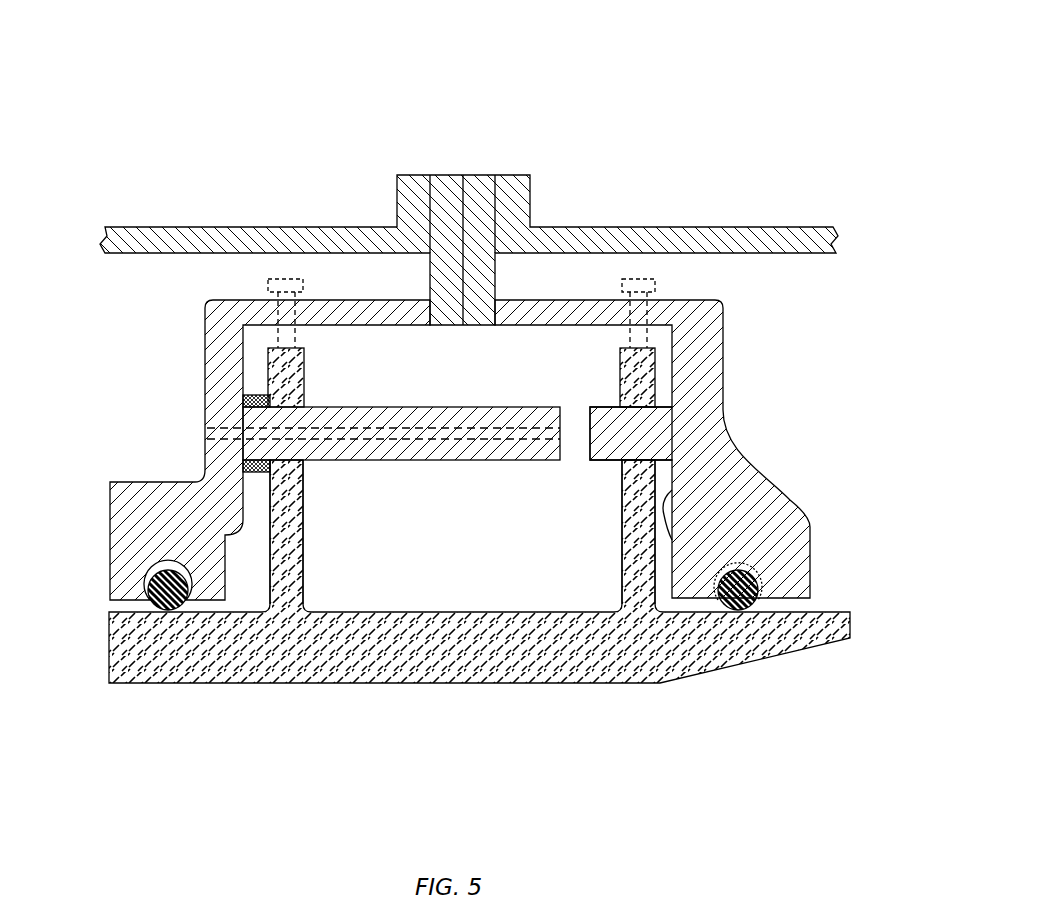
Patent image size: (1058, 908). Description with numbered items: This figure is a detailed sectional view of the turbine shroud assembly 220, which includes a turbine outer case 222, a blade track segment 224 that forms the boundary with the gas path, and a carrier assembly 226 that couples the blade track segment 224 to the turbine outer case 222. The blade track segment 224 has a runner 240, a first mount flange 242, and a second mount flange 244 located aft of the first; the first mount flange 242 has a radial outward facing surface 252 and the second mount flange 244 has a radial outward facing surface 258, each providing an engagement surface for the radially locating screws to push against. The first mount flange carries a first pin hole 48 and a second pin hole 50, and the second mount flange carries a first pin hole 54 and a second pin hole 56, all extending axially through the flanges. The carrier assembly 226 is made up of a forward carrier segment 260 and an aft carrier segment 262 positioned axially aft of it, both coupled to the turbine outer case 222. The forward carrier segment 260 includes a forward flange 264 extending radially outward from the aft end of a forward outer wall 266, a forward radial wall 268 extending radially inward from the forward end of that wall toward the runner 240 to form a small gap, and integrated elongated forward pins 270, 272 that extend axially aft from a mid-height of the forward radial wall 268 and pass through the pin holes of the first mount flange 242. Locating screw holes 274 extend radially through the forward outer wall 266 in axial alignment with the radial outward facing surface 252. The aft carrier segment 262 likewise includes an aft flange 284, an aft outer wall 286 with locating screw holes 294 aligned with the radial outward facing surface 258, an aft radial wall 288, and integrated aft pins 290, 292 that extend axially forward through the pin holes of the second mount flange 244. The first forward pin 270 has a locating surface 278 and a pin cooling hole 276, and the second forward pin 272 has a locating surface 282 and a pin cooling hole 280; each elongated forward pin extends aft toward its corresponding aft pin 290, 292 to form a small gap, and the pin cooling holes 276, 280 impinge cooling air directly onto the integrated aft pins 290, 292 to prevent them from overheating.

The turbine shroud assembly 220 is at (750, 88).
The turbine outer case 222 is at (567, 176).
The blade track segment 224 is at (479, 602).
The carrier assembly 226 is at (717, 393).
The runner 240 is at (715, 647).
The first mount flange 242 is at (282, 575).
The second mount flange 244 is at (642, 588).
The radial outward facing surface 252 is at (275, 343).
The radial outward facing surface 258 is at (648, 348).
The forward carrier segment 260 is at (184, 297).
The aft carrier segment 262 is at (717, 393).
The forward flange 264 is at (443, 190).
The forward outer wall 266 is at (342, 310).
The forward radial wall 268 is at (264, 394).
The first integrated elongated forward pin 270 is at (401, 591).
The second integrated elongated forward pin 272 is at (401, 591).
The locating screw holes 274 is at (201, 343).
The pin cooling hole 276 is at (401, 591).
The locating surface 278 is at (214, 428).
The pin cooling hole 280 is at (512, 435).
The locating surface 282 is at (606, 408).
The aft flange 284 is at (481, 190).
The aft outer wall 286 is at (565, 307).
The aft radial wall 288 is at (667, 393).
The first integrated aft pin 290 is at (704, 596).
The second integrated aft pin 292 is at (704, 596).
The locating screw holes 294 is at (729, 296).
The first pin hole 48 is at (151, 456).
The second pin hole 50 is at (285, 468).
The first pin hole 54 is at (704, 596).
The second pin hole 56 is at (658, 466).